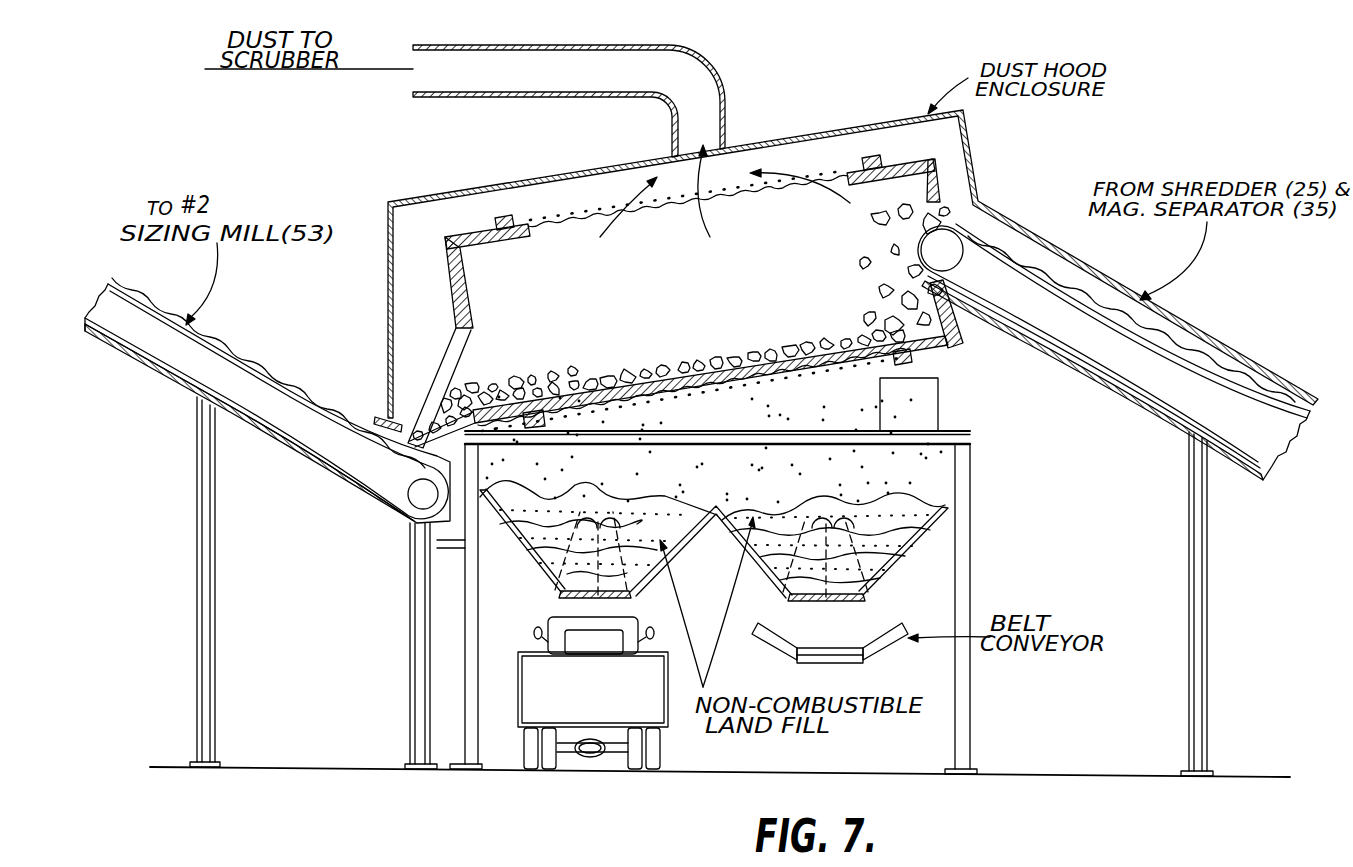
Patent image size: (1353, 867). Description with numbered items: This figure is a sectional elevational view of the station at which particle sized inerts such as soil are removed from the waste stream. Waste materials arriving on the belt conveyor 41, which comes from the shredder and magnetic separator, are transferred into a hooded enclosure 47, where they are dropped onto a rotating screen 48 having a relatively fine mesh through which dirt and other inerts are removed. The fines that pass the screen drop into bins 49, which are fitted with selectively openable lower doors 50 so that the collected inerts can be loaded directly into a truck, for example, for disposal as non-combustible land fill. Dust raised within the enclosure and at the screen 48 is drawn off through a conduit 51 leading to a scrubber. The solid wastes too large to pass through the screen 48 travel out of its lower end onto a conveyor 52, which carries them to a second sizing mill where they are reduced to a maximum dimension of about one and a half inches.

The belt conveyor 41 is at (1199, 371).
The hooded enclosure 47 is at (813, 133).
The rotating screen 48 is at (962, 350).
The bins 49 is at (722, 522).
The selectively openable lower doors 50 is at (558, 597).
The conduit 51 is at (492, 97).
The conveyor 52 is at (360, 440).